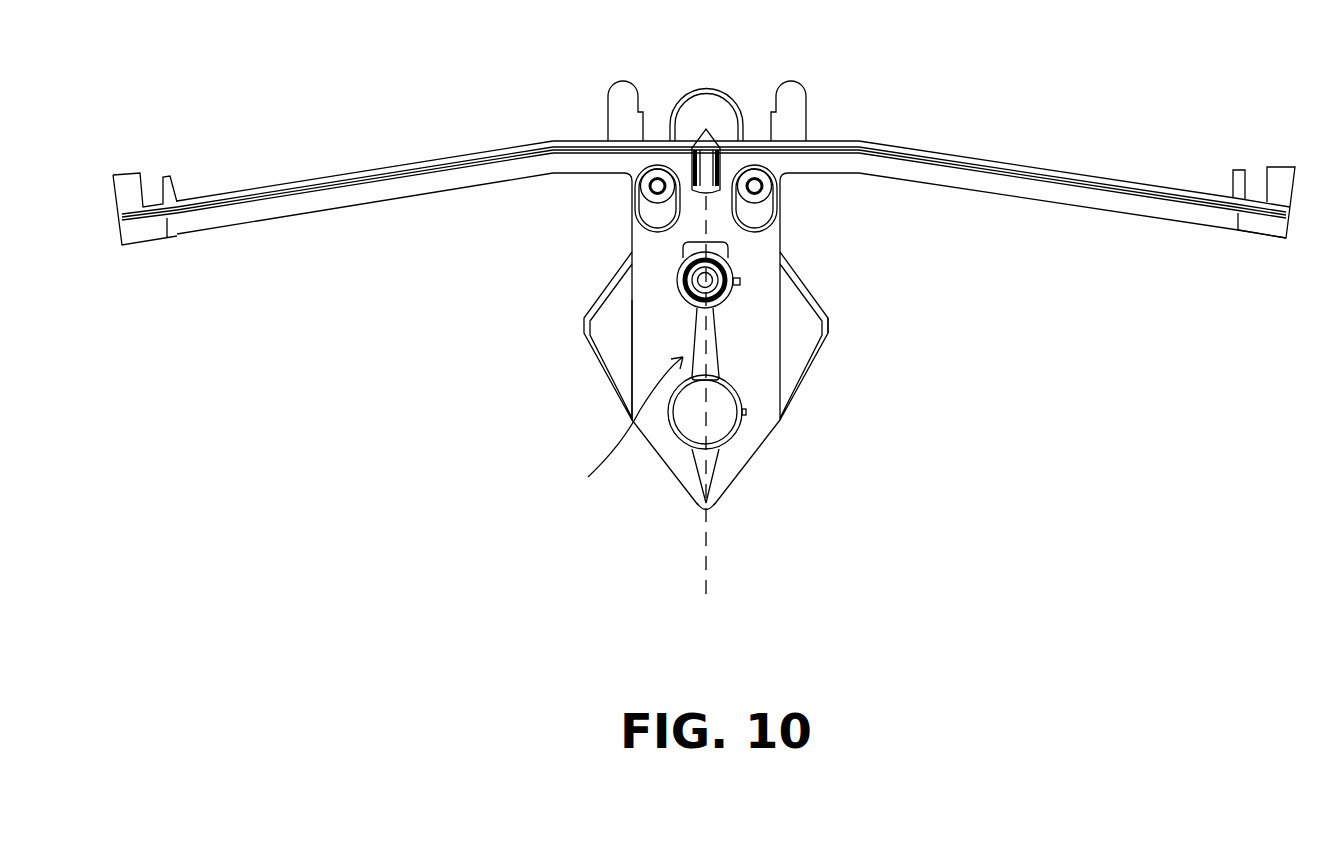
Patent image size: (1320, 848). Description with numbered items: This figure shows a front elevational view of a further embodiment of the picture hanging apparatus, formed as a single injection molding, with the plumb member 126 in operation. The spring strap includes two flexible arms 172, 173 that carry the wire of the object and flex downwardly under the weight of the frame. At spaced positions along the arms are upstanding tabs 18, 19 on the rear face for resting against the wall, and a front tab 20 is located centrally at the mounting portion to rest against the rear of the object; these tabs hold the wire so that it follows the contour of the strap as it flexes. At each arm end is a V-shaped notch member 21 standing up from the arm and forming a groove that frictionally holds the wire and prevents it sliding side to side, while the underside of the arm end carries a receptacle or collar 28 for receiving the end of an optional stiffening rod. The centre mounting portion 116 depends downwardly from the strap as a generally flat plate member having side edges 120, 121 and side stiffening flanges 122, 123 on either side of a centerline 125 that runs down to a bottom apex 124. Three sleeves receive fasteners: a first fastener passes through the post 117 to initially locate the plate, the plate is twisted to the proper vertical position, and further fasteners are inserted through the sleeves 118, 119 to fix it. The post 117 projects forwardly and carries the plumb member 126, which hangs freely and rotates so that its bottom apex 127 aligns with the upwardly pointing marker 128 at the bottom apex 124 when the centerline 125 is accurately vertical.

The upstanding tab 18 is at (615, 85).
The upstanding tab 19 is at (797, 90).
The front tab 20 is at (721, 92).
The V-shaped notch member 21 is at (1290, 143).
The receptacle or collar 28 is at (1257, 231).
The arm 172 is at (387, 168).
The arm 173 is at (1053, 165).
The centre mounting portion 116 is at (762, 363).
The post 117 is at (721, 267).
The sleeve 118 is at (637, 186).
The sleeve 119 is at (776, 186).
The side edge 120 is at (780, 303).
The side edge 121 is at (628, 347).
The side stiffening flange 122 is at (827, 322).
The side stiffening flange 123 is at (604, 307).
The bottom apex 124 is at (723, 502).
The centerline 125 is at (717, 363).
The plumb member 126 is at (624, 433).
The bottom apex of the plumb member 127 is at (708, 492).
The marker 128 is at (696, 511).